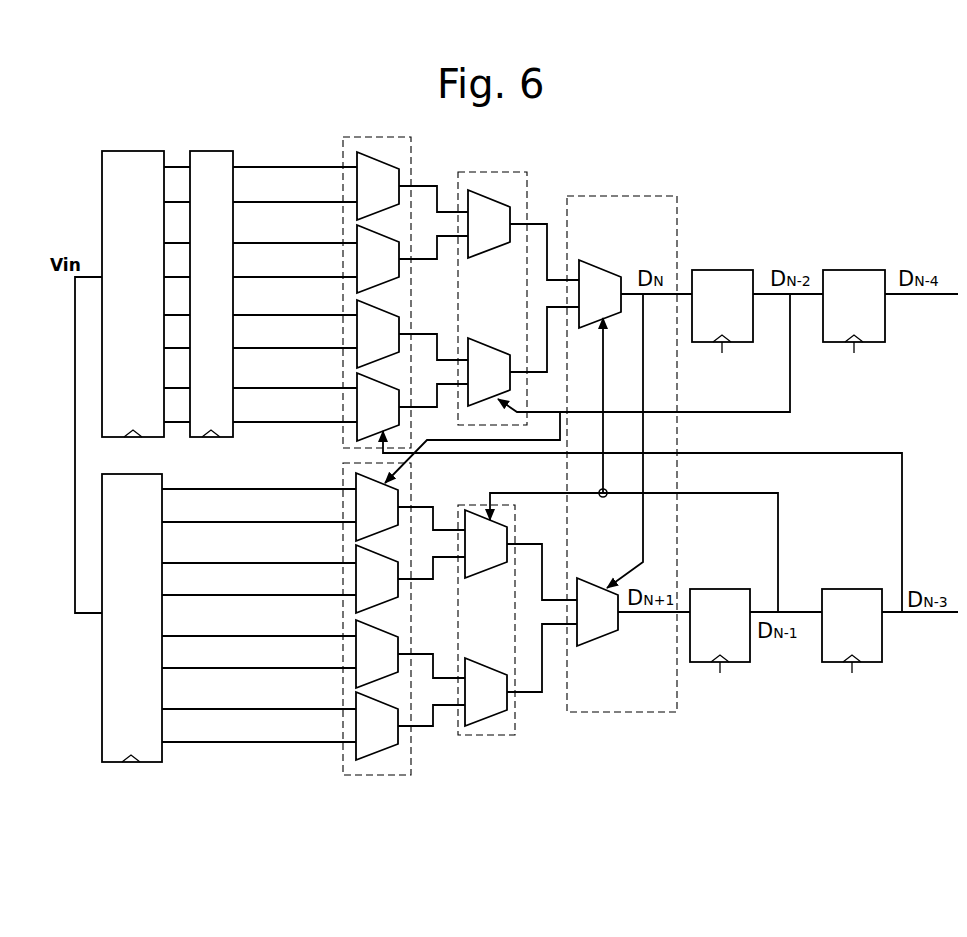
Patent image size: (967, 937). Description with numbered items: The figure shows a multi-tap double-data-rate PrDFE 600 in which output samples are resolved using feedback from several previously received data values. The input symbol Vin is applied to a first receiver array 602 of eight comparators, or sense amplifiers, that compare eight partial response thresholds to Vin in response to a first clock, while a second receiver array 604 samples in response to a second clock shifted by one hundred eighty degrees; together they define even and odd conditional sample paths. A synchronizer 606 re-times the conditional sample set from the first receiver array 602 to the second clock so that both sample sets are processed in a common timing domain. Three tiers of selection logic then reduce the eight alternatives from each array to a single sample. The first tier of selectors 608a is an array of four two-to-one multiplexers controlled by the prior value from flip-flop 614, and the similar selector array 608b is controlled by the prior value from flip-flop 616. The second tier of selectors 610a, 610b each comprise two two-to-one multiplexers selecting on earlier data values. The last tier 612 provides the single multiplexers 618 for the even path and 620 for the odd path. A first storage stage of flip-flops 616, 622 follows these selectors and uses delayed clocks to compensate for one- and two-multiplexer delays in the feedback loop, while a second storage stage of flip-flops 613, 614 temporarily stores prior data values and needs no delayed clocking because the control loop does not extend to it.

The multi-tap double-data-rate PrDFE 600 is at (842, 178).
The first receiver array 602 is at (102, 181).
The second receiver array 604 is at (102, 712).
The synchronizer 606 is at (236, 159).
The first tier of selectors 608a is at (388, 136).
The selector array 608b is at (392, 777).
The second tier of selectors 610a is at (495, 172).
The second tier of selectors 610b is at (490, 736).
The last tier of selectors 612 is at (680, 196).
The flip-flop 613 is at (851, 270).
The flip-flop 614 is at (850, 589).
The flip-flop 616 is at (723, 270).
The multiplexer 618 is at (612, 273).
The multiplexer 620 is at (593, 647).
The flip-flop 622 is at (723, 589).